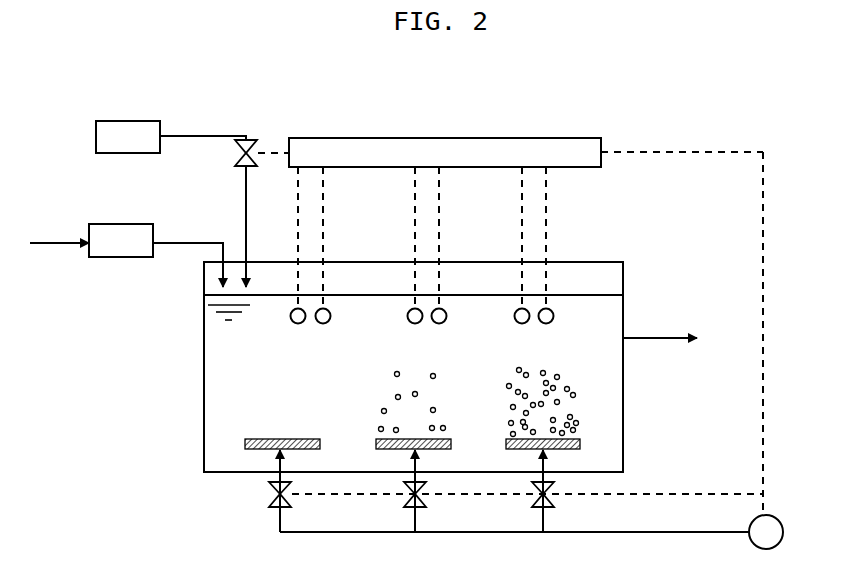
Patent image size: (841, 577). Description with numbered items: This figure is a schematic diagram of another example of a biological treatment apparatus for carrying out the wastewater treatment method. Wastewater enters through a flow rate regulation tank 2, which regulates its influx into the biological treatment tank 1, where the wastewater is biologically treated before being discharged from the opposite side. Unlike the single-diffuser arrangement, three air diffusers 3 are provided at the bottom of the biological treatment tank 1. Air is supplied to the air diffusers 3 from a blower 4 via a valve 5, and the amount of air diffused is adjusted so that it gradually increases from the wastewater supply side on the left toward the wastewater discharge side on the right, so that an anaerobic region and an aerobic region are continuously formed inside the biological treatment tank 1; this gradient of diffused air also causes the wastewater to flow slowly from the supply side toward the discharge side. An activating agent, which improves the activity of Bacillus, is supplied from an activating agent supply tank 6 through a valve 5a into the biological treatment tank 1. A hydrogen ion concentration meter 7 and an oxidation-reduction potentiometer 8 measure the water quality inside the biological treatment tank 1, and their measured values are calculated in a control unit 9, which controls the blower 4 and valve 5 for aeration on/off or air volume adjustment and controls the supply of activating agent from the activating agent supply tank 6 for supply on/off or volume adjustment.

The biological treatment tank 1 is at (413, 367).
The flow rate regulation tank 2 is at (121, 228).
The air diffuser 3 is at (412, 432).
The blower 4 is at (779, 532).
The valve 5 is at (402, 507).
The valve 5a is at (231, 161).
The activating agent supply tank 6 is at (128, 124).
The hydrogen ion concentration meter (pH meter) 7 is at (407, 333).
The oxidation-reduction potentiometer (ORP meter) 8 is at (436, 333).
The control unit 9 is at (445, 139).